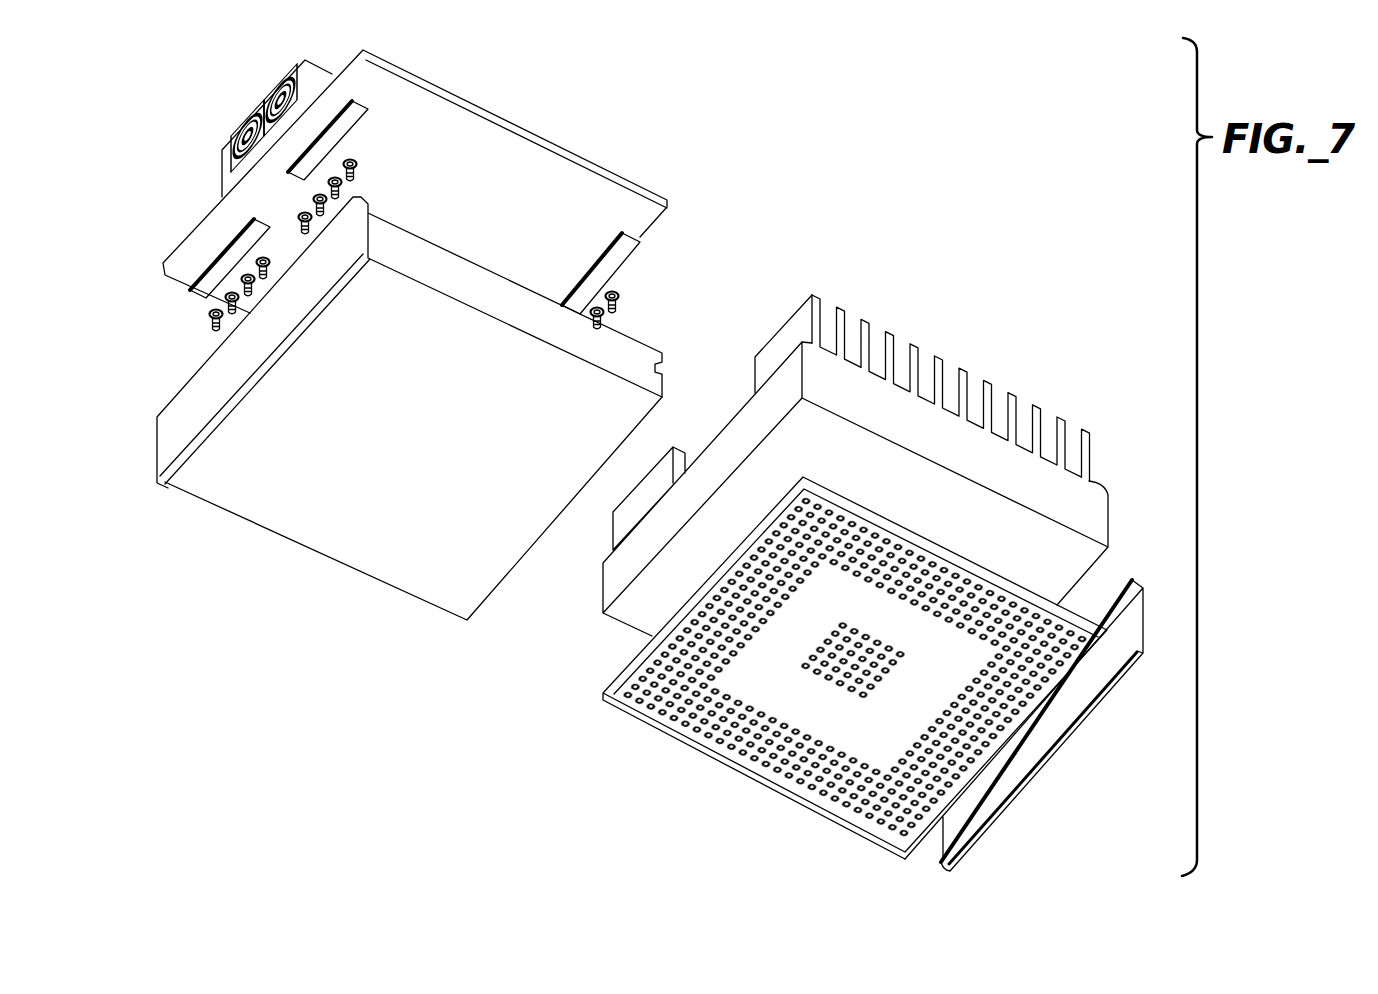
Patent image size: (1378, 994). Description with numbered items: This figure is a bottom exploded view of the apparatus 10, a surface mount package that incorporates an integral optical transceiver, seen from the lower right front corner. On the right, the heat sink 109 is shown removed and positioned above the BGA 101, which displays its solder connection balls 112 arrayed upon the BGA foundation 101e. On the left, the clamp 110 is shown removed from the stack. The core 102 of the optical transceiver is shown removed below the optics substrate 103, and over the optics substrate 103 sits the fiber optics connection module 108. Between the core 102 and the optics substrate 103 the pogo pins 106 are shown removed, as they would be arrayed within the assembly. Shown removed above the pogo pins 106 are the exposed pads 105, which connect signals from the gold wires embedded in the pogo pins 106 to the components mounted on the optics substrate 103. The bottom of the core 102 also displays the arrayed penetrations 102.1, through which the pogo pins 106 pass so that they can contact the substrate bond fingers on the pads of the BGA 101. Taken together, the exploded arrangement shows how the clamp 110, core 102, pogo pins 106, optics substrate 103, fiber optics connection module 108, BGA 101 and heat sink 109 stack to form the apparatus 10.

The apparatus 10 is at (147, 116).
The BGA 101 is at (1077, 612).
The BGA foundation 101e is at (977, 666).
The core 102 is at (428, 448).
The arrayed penetrations 102.1 is at (390, 346).
The optics substrate 103 is at (545, 225).
The exposed pads 105 is at (418, 138).
The pogo pins 106 is at (415, 194).
The fiber optics connection module 108 is at (262, 116).
The heat sink 109 is at (940, 358).
The clamp 110 is at (203, 390).
The solder connection balls 112 is at (903, 576).